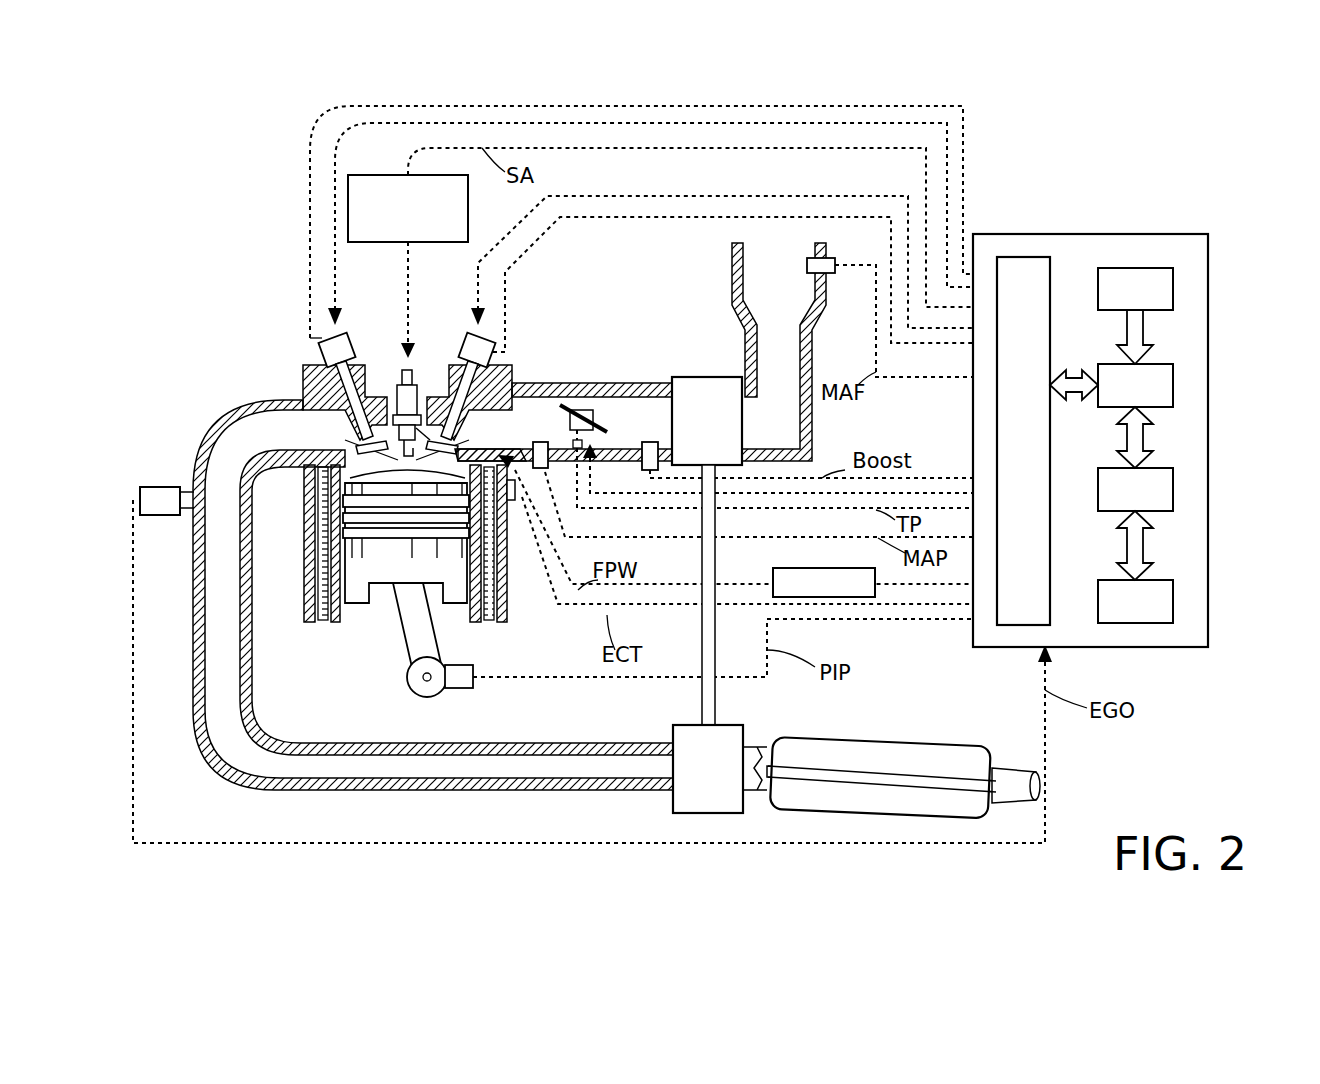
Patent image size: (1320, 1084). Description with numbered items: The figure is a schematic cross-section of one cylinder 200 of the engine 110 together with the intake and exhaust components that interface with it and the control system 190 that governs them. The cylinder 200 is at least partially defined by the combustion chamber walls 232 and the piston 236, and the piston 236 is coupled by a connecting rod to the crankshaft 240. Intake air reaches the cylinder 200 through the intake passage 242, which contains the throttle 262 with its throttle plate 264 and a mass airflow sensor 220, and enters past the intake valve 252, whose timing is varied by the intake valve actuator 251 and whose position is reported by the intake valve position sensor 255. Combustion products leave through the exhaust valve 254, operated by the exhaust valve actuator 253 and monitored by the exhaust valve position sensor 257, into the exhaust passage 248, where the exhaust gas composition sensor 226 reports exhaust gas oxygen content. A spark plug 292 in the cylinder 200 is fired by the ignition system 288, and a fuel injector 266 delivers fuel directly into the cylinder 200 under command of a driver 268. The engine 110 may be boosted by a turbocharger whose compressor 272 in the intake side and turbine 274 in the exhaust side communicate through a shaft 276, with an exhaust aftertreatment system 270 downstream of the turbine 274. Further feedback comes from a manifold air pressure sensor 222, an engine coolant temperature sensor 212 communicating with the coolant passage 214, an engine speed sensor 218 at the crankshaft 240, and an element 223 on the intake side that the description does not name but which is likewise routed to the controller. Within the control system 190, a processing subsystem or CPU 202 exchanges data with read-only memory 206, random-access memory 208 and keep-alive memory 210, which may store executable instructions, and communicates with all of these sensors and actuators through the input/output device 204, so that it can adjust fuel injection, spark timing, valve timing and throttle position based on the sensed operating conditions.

The engine 110 is at (230, 314).
The control system 190 is at (1129, 426).
The cylinder 200 is at (340, 462).
The processing subsystem (CPU) 202 is at (1175, 383).
The input/output device 204 is at (1052, 270).
The read-only memory (ROM) 206 is at (1175, 285).
The random-access memory (RAM) 208 is at (1175, 488).
The keep-alive memory (KAM) 210 is at (1175, 600).
The engine coolant temperature sensor 212 is at (515, 500).
The coolant passage 214 is at (495, 622).
The engine speed sensor 218 is at (470, 690).
The mass airflow sensor 220 is at (832, 258).
The manifold air pressure sensor 222 is at (548, 470).
The boost pressure sensor 223 is at (642, 460).
The exhaust gas composition sensor 226 is at (138, 488).
The combustion chamber walls 232 is at (337, 615).
The piston 236 is at (387, 600).
The crankshaft 240 is at (412, 692).
The intake passage 242 is at (795, 294).
The exhaust passage 248 is at (290, 441).
The intake valve actuator 251 is at (474, 340).
The intake valve 252 is at (455, 440).
The exhaust valve actuator 253 is at (343, 340).
The exhaust valve 254 is at (345, 430).
The intake valve position sensor 255 is at (498, 355).
The exhaust valve position sensor 257 is at (330, 353).
The throttle 262 is at (593, 405).
The throttle plate 264 is at (581, 408).
The fuel injector 266 is at (475, 460).
The driver 268 is at (773, 571).
The exhaust aftertreatment system 270 is at (965, 750).
The compressor 272 is at (692, 377).
The turbine 274 is at (673, 800).
The shaft 276 is at (708, 690).
The ignition system 288 is at (365, 175).
The spark plug 292 is at (400, 400).